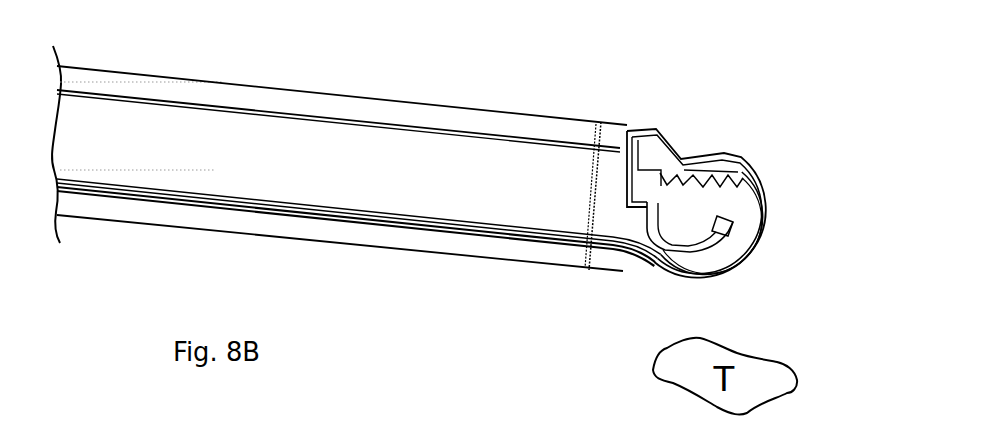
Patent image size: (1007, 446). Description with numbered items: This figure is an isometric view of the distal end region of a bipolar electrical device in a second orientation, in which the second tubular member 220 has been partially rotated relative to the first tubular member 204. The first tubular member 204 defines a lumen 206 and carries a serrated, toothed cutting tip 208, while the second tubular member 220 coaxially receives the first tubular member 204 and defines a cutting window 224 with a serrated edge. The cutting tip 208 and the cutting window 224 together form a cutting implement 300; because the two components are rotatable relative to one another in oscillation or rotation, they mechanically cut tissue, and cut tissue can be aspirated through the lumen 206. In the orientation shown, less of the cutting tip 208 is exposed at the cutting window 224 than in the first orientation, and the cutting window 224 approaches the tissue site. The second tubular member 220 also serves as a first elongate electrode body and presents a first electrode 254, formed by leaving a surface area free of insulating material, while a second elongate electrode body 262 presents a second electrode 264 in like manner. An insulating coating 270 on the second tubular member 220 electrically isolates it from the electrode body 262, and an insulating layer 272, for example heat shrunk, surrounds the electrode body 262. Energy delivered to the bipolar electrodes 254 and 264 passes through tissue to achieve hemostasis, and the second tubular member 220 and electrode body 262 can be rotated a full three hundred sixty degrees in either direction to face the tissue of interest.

The insulating layer 272 is at (418, 122).
The insulating coating 270 is at (607, 213).
The second elongate electrode body 262 is at (605, 262).
The cutting implement 300 is at (735, 102).
The lumen 206 is at (725, 168).
The second electrode 264 is at (718, 273).
The cutting window 224 is at (693, 160).
The second tubular member 220 is at (650, 150).
The cutting tip 208 is at (678, 175).
The first tubular member 204 is at (682, 208).
The first electrode 254 is at (730, 219).